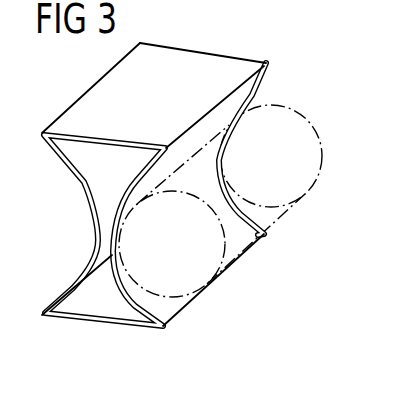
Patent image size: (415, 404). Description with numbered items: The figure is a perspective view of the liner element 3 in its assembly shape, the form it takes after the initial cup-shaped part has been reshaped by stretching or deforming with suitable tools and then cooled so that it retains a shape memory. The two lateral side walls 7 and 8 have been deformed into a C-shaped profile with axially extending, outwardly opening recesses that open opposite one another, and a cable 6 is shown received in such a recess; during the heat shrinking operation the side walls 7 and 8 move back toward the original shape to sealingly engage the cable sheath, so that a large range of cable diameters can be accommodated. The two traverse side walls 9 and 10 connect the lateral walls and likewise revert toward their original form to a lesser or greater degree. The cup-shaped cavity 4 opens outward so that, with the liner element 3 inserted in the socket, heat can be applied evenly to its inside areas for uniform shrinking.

The liner element 3 is at (226, 296).
The cup-shaped cavity 4 is at (97, 177).
The cable 6 is at (291, 124).
The side wall 7 is at (125, 292).
The side wall 8 is at (80, 268).
The traverse side wall 9 is at (208, 52).
The traverse side wall 10 is at (92, 326).